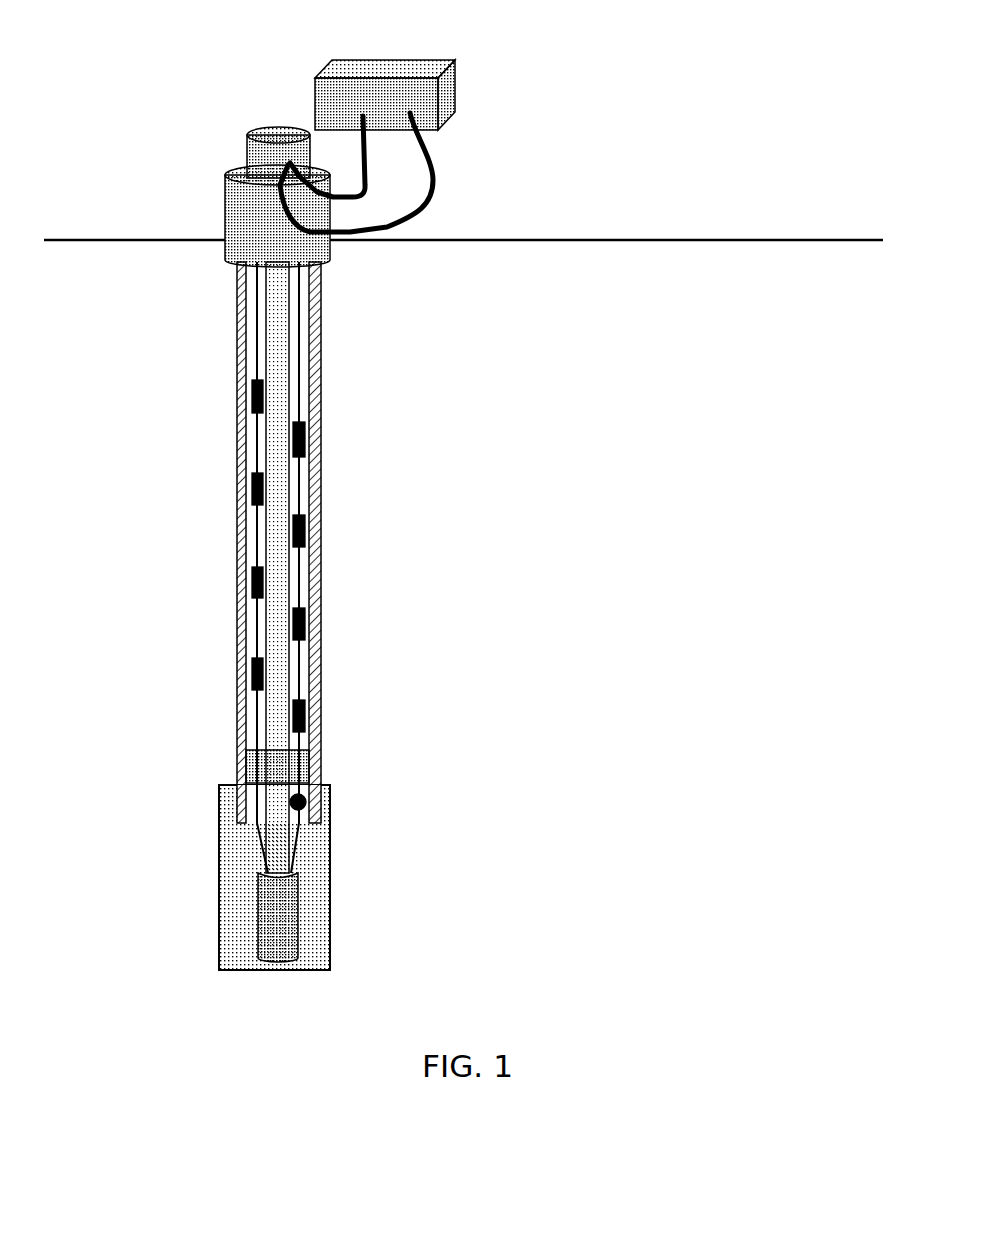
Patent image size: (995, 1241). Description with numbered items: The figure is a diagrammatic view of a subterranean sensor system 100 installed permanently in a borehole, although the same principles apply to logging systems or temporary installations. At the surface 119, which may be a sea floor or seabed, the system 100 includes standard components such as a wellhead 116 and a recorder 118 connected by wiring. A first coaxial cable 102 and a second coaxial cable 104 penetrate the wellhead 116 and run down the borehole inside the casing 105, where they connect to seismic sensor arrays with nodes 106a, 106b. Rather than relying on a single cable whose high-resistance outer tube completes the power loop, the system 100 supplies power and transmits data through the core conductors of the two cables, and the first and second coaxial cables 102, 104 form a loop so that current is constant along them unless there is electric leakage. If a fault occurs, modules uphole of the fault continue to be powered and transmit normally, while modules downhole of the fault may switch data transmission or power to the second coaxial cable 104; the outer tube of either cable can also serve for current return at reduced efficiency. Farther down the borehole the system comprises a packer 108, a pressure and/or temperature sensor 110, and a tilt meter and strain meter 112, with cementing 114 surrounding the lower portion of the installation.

The subterranean sensor system 100 is at (245, 96).
The first coaxial cable 102 is at (262, 635).
The second coaxial cable 104 is at (305, 661).
The casing 105 is at (220, 436).
The seismic sensor array node 106a is at (312, 420).
The seismic sensor array node 106b is at (314, 510).
The packer 108 is at (243, 763).
The pressure and/or temperature sensor 110 is at (318, 778).
The tilt meter and strain meter 112 is at (289, 888).
The cementing 114 is at (318, 910).
The wellhead 116 is at (248, 148).
The recorder 118 is at (382, 82).
The surface 119 is at (591, 238).